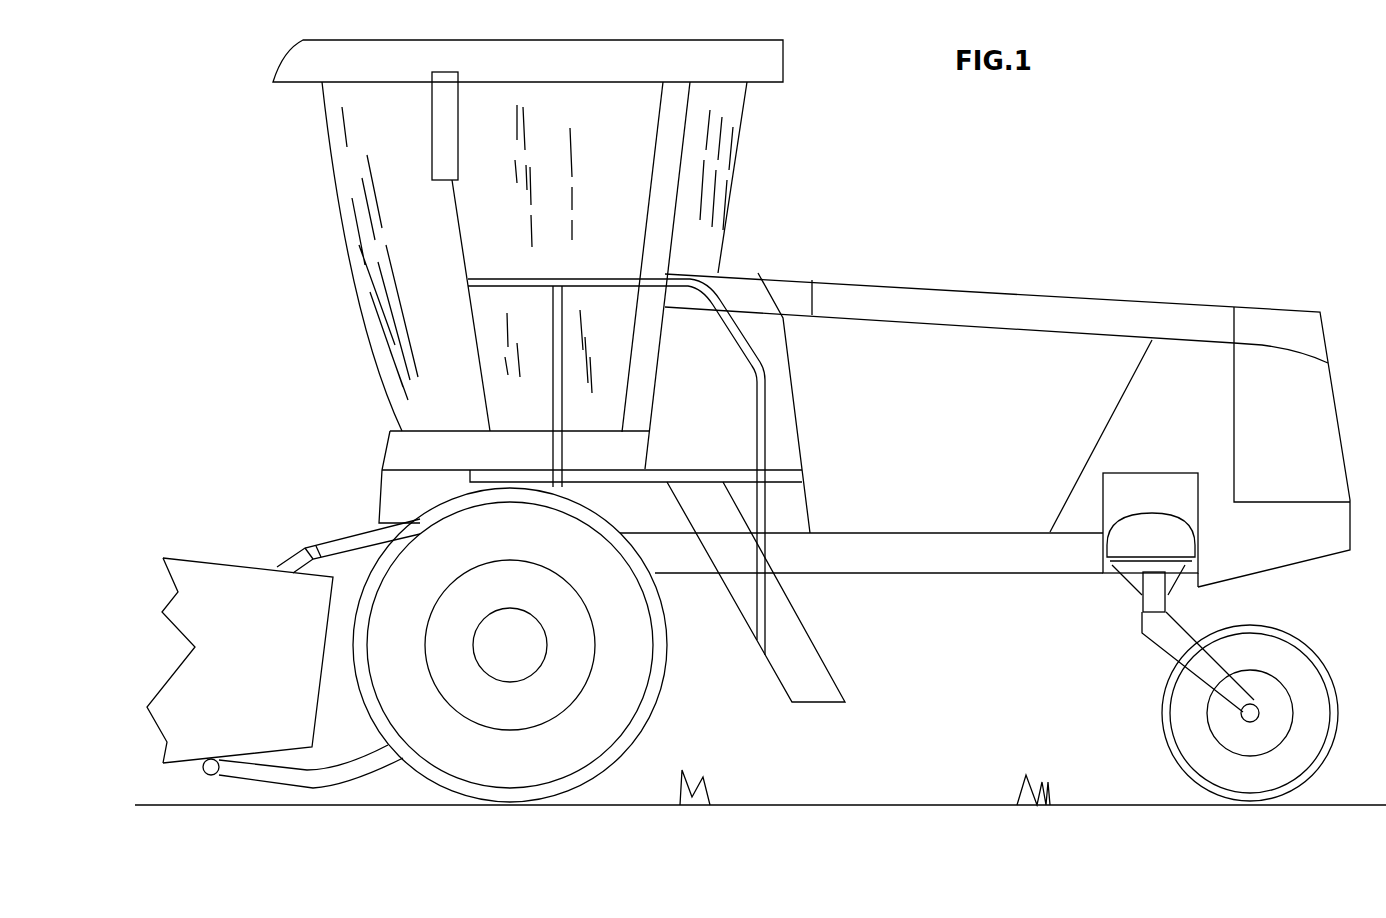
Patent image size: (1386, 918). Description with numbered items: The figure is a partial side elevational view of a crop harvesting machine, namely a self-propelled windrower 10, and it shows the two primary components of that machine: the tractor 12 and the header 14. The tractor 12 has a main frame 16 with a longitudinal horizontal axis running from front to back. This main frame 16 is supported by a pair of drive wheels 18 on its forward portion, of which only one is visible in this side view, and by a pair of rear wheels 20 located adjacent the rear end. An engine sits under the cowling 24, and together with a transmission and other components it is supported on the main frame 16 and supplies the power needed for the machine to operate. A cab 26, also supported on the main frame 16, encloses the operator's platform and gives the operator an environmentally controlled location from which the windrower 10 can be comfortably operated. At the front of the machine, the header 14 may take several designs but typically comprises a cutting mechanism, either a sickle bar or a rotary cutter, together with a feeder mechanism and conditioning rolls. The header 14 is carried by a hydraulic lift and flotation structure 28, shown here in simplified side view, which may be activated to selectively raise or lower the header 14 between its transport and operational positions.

The self-propelled windrower 10 is at (1270, 197).
The tractor 12 is at (1130, 258).
The header 14 is at (202, 516).
The main frame 16 is at (923, 563).
The drive wheels 18 is at (662, 720).
The rear wheels 20 is at (1306, 653).
The cowling 24 is at (954, 447).
The cab 26 is at (722, 173).
The hydraulic lift and flotation structure 28 is at (327, 548).